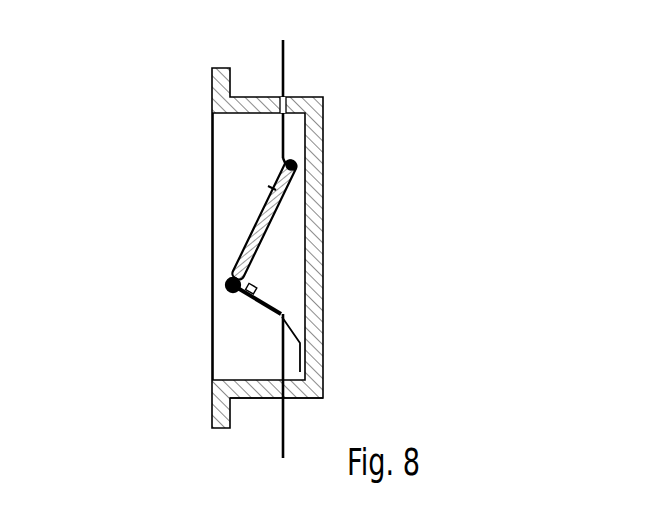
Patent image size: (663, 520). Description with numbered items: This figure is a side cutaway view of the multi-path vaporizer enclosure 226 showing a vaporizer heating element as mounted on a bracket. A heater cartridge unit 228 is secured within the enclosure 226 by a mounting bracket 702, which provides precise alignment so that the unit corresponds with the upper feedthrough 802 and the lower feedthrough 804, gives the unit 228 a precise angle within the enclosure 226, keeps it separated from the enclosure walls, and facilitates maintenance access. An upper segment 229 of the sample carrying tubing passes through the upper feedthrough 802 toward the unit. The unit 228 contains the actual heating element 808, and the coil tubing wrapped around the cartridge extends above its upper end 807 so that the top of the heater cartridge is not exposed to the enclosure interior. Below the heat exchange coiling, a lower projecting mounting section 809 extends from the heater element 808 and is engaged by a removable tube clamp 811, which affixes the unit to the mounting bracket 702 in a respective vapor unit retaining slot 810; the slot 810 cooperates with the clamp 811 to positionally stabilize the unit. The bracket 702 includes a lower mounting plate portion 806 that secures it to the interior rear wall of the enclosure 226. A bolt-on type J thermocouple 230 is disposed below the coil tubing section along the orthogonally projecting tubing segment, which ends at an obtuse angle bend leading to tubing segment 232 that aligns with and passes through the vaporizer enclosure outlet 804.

The multi-path vaporizer enclosure 226 is at (212, 72).
The upper feedthrough 802 is at (284, 95).
The first conductor wire 229 is at (287, 63).
The upper end 807 is at (298, 166).
The heating element 808 is at (265, 190).
The heater cartridge unit 228 is at (272, 213).
The removable tube clamp 811 is at (226, 280).
The vapor unit retaining slot 810 is at (226, 288).
The type J thermocouple 230 is at (255, 288).
The lower projecting mounting section 809 is at (232, 293).
The lower mounting plate portion 806 is at (301, 345).
The mounting bracket 702 is at (270, 315).
The lower feedthrough 804 is at (290, 397).
The tubing segment 232 is at (261, 405).